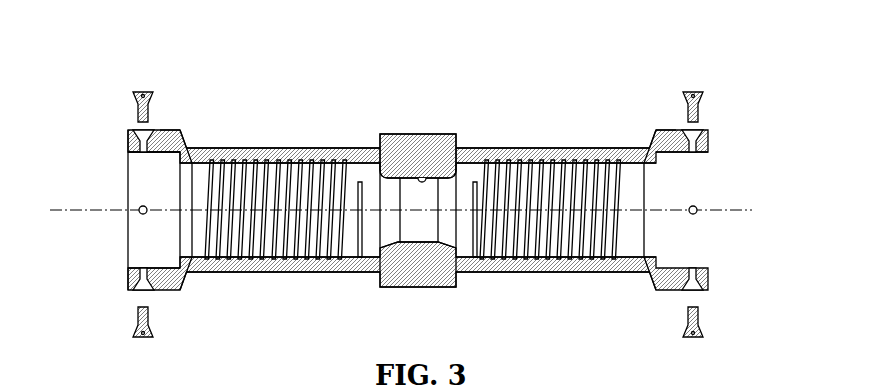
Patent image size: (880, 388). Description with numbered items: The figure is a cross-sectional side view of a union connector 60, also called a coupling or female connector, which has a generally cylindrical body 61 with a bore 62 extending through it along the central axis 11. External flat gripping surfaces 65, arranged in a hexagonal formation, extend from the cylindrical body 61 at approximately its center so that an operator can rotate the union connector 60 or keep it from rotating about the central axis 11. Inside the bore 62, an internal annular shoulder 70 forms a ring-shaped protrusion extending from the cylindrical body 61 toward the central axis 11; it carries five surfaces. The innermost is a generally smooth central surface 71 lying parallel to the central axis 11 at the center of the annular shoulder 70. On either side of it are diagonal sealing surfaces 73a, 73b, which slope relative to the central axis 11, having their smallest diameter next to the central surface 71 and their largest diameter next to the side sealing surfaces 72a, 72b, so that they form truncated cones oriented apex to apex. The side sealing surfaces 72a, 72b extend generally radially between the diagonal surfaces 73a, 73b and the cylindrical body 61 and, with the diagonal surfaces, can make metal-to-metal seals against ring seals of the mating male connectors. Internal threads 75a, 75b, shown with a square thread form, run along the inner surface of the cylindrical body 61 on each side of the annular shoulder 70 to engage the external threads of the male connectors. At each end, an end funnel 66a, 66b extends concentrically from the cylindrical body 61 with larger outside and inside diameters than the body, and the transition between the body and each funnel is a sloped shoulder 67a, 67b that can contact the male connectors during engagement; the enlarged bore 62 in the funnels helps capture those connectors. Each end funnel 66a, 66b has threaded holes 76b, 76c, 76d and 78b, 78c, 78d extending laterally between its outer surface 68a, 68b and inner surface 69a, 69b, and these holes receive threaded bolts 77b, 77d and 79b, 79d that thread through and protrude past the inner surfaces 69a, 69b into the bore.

The union connector 60 is at (292, 66).
The central axis 11 is at (72, 210).
The bore 62 is at (127, 247).
The cylindrical body 61 is at (285, 272).
The external flat gripping surfaces 65 is at (418, 288).
The internal annular shoulder 70 is at (407, 249).
The central surface 71 is at (423, 177).
The diagonal sealing surface 73a is at (384, 171).
The diagonal sealing surface 73b is at (453, 171).
The side sealing surface 72a is at (379, 162).
The side sealing surface 72b is at (458, 162).
The internal threads 75a is at (272, 160).
The internal threads 75b is at (568, 162).
The sloped shoulder 67a is at (189, 150).
The sloped shoulder 67b is at (648, 150).
The outer surface 68a is at (177, 130).
The outer surface 68b is at (650, 130).
The inner surface 69a is at (157, 153).
The inner surface 69b is at (680, 153).
The end funnel 66a is at (172, 291).
The end funnel 66b is at (673, 291).
The threaded hole 76c is at (139, 207).
The threaded hole 78c is at (697, 207).
The threaded hole 76d is at (140, 131).
The threaded hole 78d is at (697, 132).
The threaded hole 76b is at (138, 289).
The threaded hole 78b is at (697, 289).
The threaded bolt 77d is at (133, 92).
The threaded bolt 79d is at (700, 92).
The threaded bolt 77b is at (137, 334).
The threaded bolt 79b is at (700, 334).